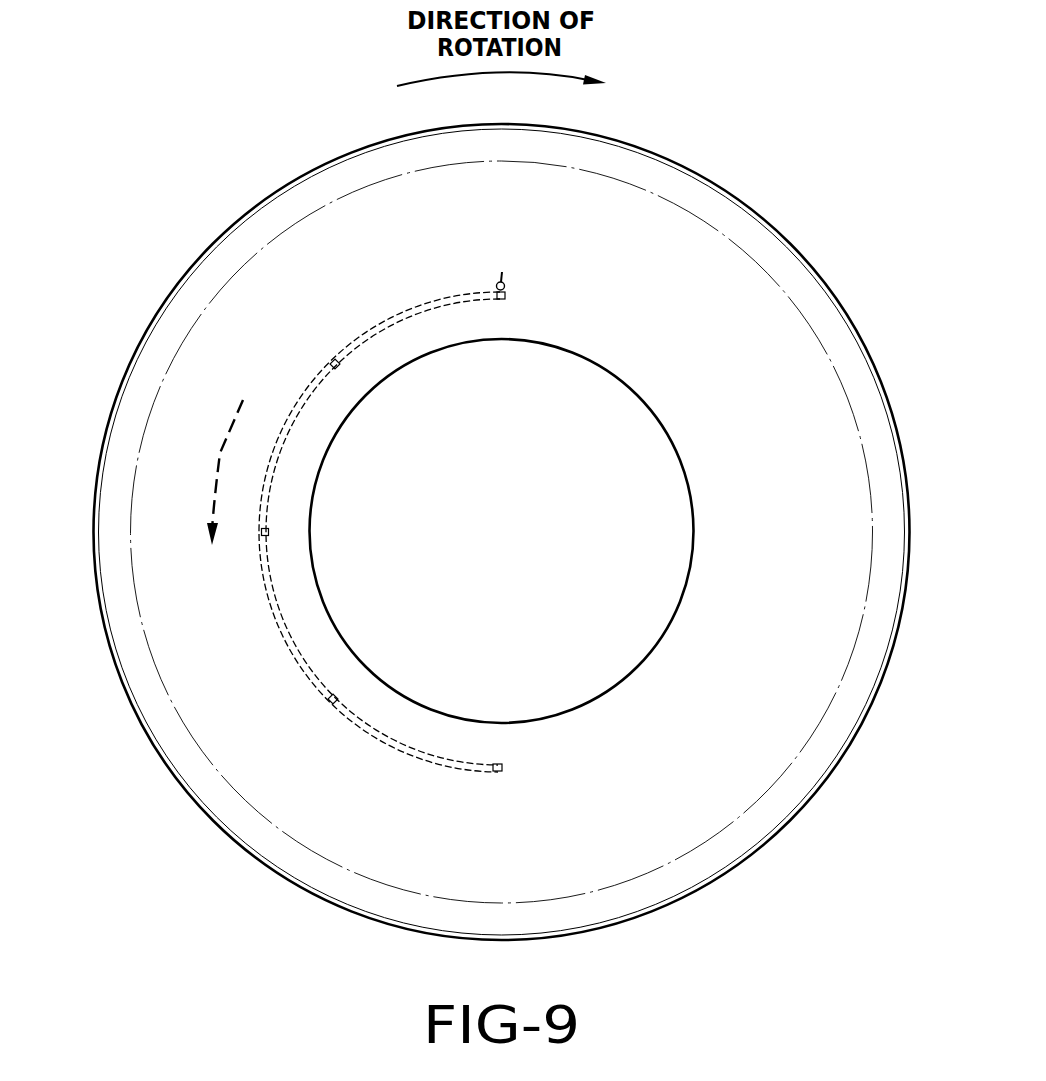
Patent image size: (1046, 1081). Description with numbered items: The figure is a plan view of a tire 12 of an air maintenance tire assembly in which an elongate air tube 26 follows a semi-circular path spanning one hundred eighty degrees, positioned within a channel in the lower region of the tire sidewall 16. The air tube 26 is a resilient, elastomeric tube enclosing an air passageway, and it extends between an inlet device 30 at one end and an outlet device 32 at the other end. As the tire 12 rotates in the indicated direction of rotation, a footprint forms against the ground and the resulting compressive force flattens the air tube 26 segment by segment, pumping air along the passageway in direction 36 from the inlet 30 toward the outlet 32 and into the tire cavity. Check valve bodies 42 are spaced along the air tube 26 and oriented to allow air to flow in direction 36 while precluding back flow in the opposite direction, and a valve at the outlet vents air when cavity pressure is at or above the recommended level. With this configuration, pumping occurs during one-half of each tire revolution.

The tire 12 is at (717, 778).
The sidewall 16 is at (333, 802).
The air tube 26 is at (376, 326).
The inlet device 30 is at (496, 285).
The outlet device 32 is at (500, 774).
The direction 36 is at (220, 452).
The check valve bodies 42 is at (263, 535).